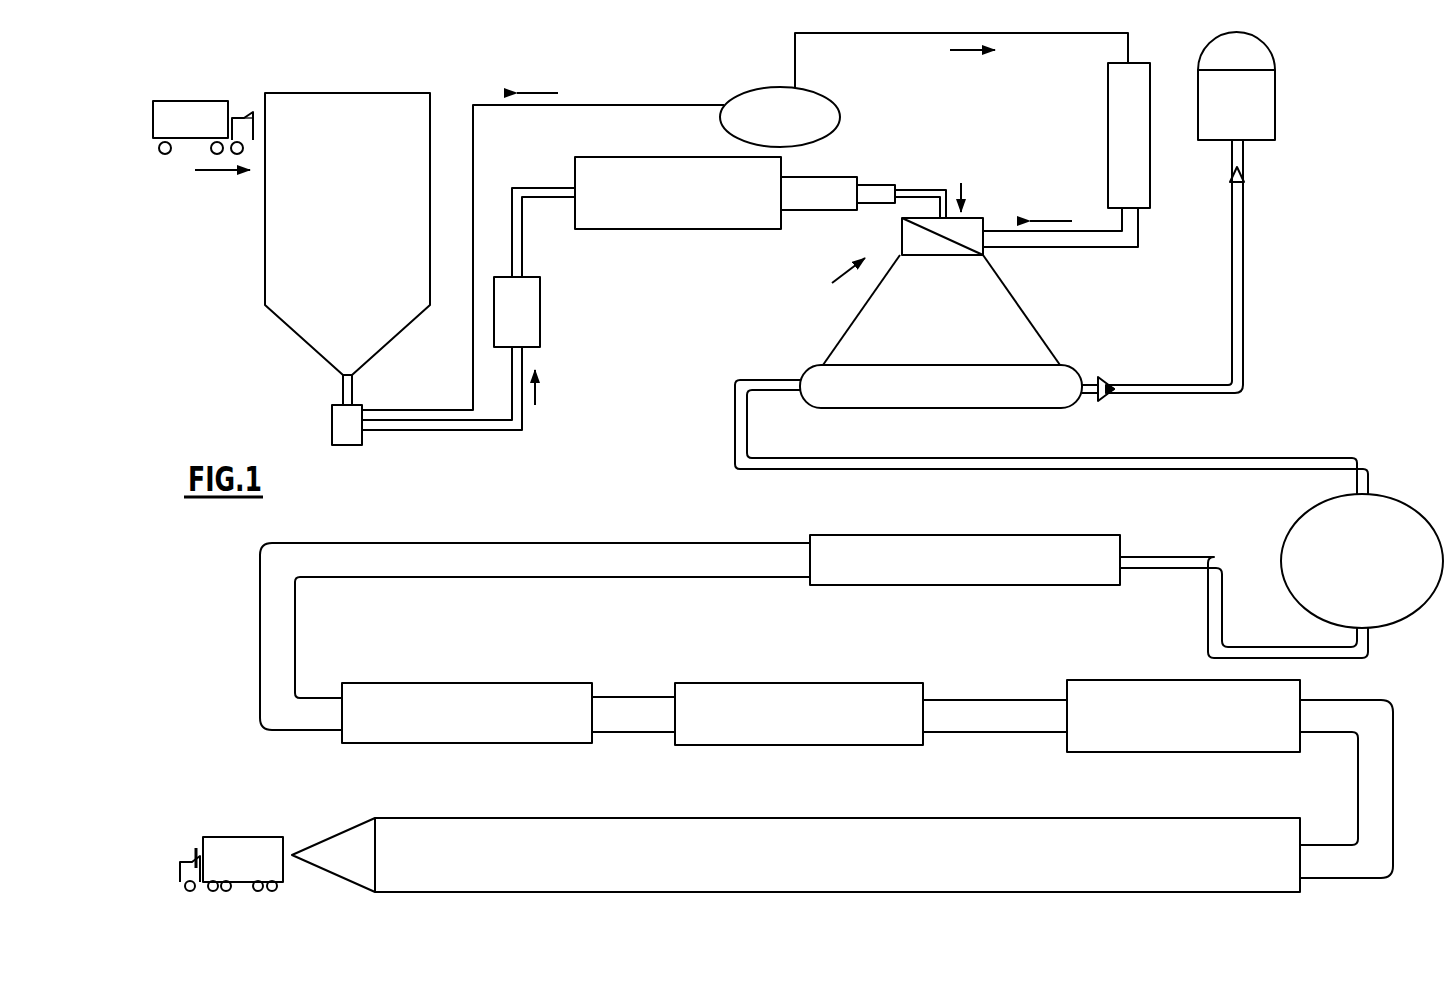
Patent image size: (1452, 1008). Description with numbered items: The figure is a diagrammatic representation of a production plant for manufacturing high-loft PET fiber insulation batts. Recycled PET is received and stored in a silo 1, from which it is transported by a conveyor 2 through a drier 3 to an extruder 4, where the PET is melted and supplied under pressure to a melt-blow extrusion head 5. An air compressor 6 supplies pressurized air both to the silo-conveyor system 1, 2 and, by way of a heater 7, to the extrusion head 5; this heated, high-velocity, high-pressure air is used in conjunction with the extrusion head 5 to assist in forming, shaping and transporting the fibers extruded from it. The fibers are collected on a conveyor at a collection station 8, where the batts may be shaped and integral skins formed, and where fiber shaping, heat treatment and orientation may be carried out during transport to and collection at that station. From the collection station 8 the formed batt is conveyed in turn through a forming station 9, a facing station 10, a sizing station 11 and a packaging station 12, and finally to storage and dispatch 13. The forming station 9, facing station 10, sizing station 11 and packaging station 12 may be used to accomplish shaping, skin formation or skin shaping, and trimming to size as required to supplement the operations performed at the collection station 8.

The silo 1 is at (345, 265).
The conveyor 2 is at (363, 443).
The drier 3 is at (508, 326).
The extruder 4 is at (723, 217).
The melt-blow extrusion head 5 is at (903, 251).
The air compressor 6 is at (770, 129).
The heater 7 is at (1119, 170).
The collection station 8 is at (988, 400).
The forming station 9 is at (1076, 572).
The facing station 10 is at (532, 730).
The sizing station 11 is at (864, 730).
The packaging station 12 is at (1234, 730).
The storage and dispatch 13 is at (836, 874).